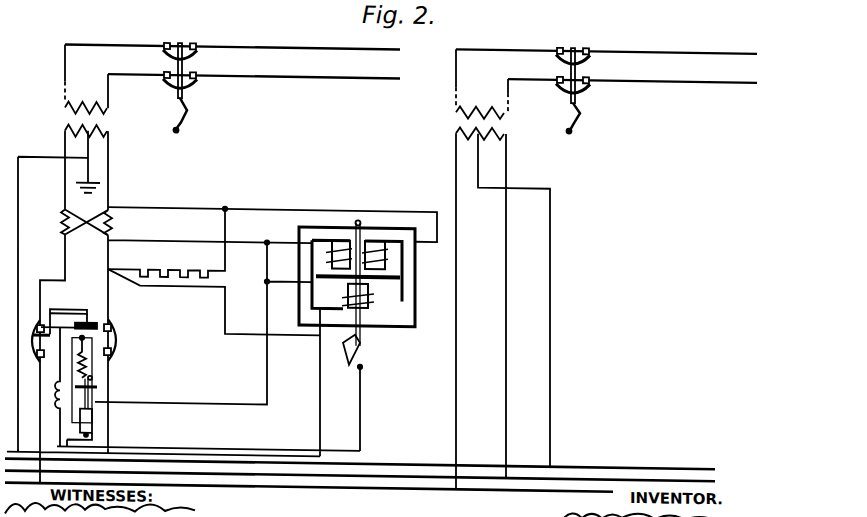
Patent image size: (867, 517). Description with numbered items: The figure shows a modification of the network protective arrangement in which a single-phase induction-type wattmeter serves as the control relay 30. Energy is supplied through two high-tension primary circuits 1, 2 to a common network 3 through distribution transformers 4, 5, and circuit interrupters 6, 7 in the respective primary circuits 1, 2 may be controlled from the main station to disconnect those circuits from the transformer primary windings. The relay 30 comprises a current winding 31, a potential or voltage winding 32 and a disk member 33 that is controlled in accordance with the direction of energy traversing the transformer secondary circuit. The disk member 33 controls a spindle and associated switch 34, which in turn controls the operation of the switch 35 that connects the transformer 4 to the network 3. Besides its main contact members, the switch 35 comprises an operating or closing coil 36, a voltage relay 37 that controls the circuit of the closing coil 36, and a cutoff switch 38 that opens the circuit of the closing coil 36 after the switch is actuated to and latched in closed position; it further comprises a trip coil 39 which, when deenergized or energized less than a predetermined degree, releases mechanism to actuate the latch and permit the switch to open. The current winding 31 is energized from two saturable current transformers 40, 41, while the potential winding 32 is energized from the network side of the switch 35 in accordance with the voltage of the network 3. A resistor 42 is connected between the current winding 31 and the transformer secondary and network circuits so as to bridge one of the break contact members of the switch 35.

The high-tension primary circuit 1 is at (311, 63).
The high-tension primary circuit 2 is at (677, 56).
The common network 3 is at (393, 477).
The distribution transformer 4 is at (99, 124).
The distribution transformer 5 is at (505, 125).
The circuit interrupter 6 is at (196, 60).
The circuit interrupter 7 is at (583, 66).
The relay 30 is at (372, 277).
The current winding 31 is at (384, 254).
The potential winding 32 is at (372, 296).
The disk member 33 is at (388, 277).
The switch 34 is at (368, 350).
The switch 35 is at (41, 363).
The closing coil 36 is at (86, 364).
The voltage relay 37 is at (97, 399).
The cutoff switch 38 is at (93, 322).
The trip coil 39 is at (53, 400).
The saturable current transformer 40 is at (62, 225).
The saturable current transformer 41 is at (110, 222).
The resistor 42 is at (214, 271).